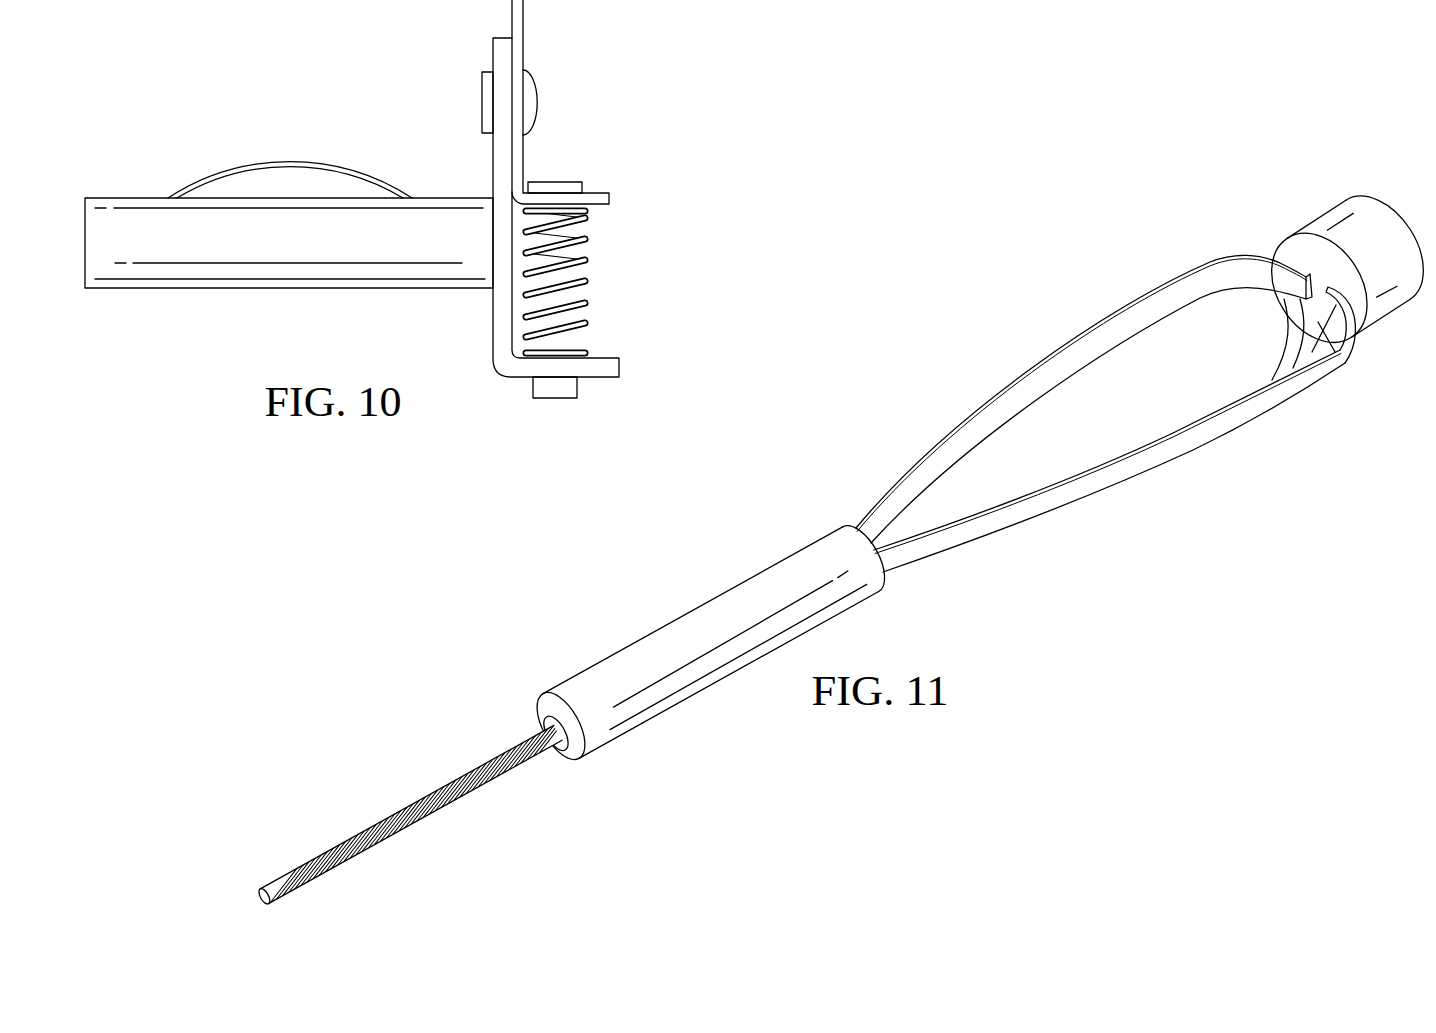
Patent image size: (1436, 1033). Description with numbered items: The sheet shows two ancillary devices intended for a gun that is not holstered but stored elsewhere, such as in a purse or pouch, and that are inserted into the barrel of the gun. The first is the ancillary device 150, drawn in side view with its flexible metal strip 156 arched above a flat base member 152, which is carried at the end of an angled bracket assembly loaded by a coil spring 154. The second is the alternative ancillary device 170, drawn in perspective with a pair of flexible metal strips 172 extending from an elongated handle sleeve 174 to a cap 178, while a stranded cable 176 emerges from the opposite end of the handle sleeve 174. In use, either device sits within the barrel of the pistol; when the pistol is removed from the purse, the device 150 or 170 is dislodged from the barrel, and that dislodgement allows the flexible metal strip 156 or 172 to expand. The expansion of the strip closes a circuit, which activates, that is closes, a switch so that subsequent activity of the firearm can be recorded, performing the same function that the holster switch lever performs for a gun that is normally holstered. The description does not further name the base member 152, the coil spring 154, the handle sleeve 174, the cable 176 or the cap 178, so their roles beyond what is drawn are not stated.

In FIG. 10, the ancillary device 150 is at (615, 120).
In FIG. 10, the base plate 152 is at (288, 290).
In FIG. 10, the coil spring 154 is at (588, 288).
In FIG. 10, the flexible metal strip 156 is at (293, 160).
In FIG. 11, the ancillary device 170 is at (1140, 250).
In FIG. 11, the flexible metal strip 172 is at (1033, 372).
In FIG. 11, the handle sleeve 174 is at (690, 612).
In FIG. 11, the stranded cable 176 is at (397, 808).
In FIG. 11, the end cap 178 is at (1373, 203).